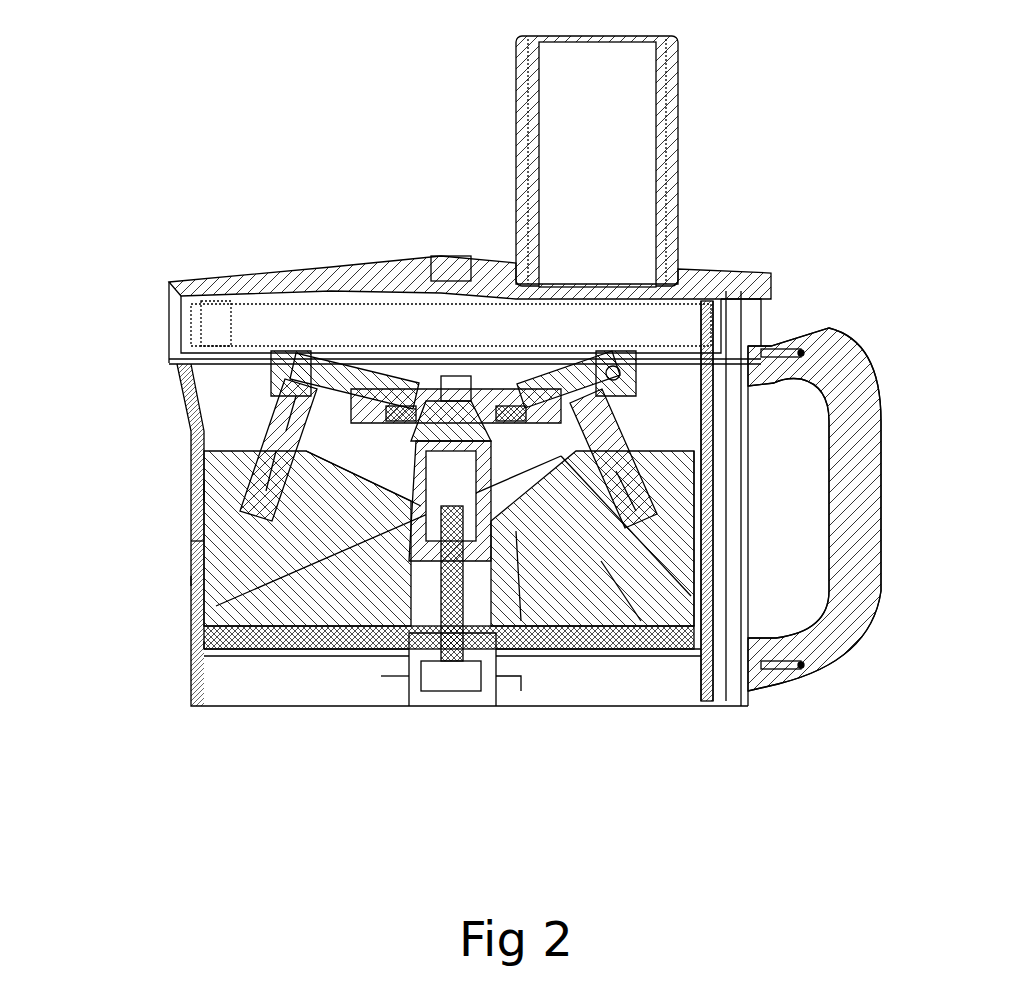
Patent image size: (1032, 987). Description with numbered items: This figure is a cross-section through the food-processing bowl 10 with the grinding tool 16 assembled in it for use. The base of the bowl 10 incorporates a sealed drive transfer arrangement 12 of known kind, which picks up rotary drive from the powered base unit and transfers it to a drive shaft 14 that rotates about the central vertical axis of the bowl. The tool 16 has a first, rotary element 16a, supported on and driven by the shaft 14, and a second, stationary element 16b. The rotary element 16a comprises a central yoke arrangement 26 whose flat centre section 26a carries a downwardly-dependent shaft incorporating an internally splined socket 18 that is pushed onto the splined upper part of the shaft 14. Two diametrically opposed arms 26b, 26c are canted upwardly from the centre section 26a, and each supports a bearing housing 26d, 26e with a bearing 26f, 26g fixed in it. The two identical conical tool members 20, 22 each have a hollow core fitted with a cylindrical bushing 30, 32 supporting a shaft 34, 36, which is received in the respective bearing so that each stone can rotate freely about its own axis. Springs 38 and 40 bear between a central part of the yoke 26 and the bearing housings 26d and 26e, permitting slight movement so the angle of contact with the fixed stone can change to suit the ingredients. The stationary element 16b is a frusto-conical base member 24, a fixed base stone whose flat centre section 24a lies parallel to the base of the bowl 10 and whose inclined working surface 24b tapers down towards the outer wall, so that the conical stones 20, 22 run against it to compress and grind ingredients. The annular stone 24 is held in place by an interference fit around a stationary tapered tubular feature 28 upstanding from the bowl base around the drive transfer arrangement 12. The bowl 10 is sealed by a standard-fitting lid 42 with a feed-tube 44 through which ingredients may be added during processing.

The food-processing bowl 10 is at (190, 580).
The sealed drive transfer arrangement 12 is at (445, 686).
The drive shaft 14 is at (452, 600).
The tool 16 is at (658, 413).
The first element 16a is at (128, 532).
The second, stationary element 16b is at (168, 628).
The socket 18 is at (465, 517).
The food-processing tool member 20 is at (660, 545).
The food-processing tool member 22 is at (222, 493).
The frusto-conically shaped base member 24 is at (272, 602).
The centre section 24a is at (505, 503).
The inclined working surface 24b is at (615, 575).
The central yoke arrangement 26 is at (521, 345).
The central section 26a is at (478, 395).
The arm 26b is at (575, 385).
The arm 26c is at (340, 375).
The bearing housing 26d is at (597, 388).
The bearing housing 26e is at (300, 378).
The bearing 26f is at (592, 400).
The bearing 26g is at (300, 397).
The stationary tapered tubular feature 28 is at (415, 600).
The cylindrical bushing 30 is at (640, 478).
The cylindrical bushing 32 is at (263, 472).
The shaft 34 is at (612, 448).
The shaft 36 is at (303, 440).
The spring 38 is at (517, 418).
The spring 40 is at (390, 418).
The lid 42 is at (262, 282).
The feed-tube 44 is at (670, 95).